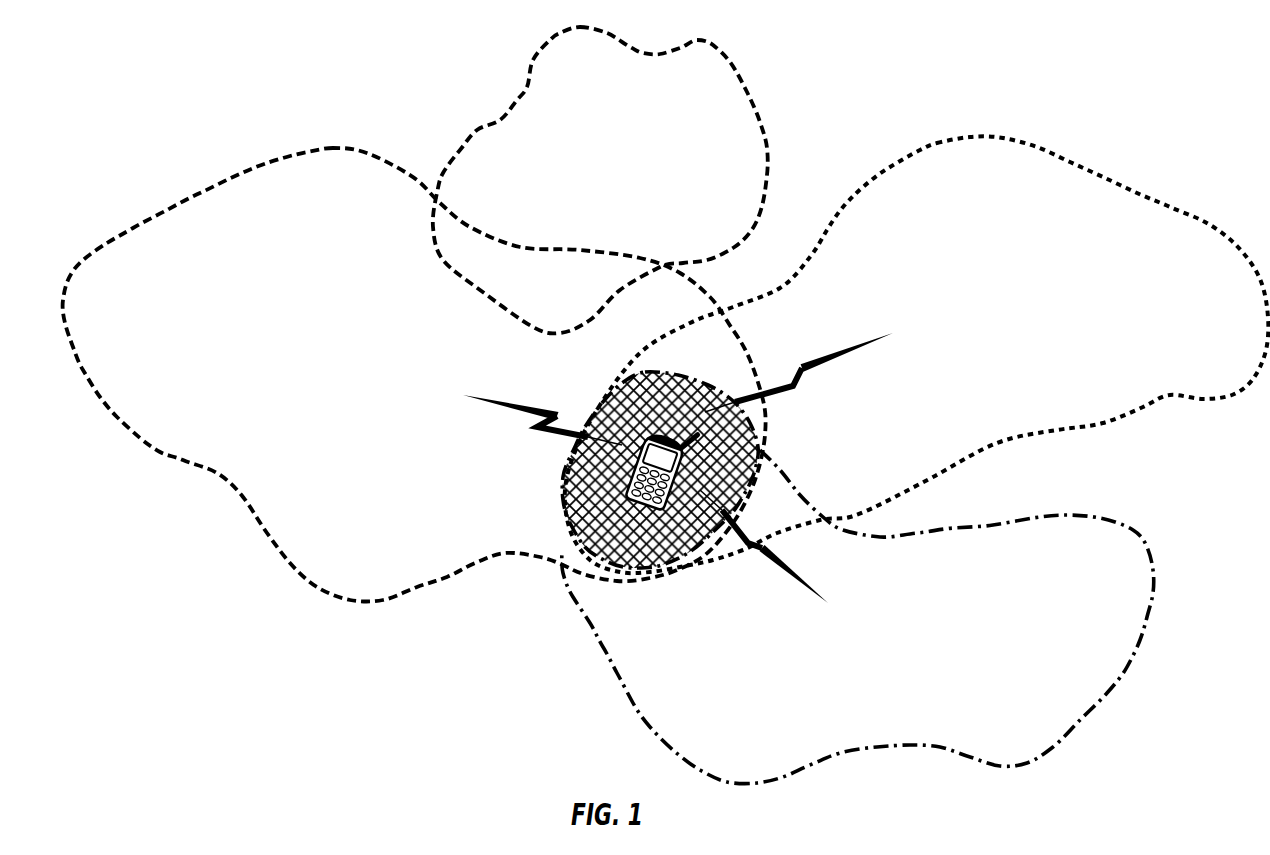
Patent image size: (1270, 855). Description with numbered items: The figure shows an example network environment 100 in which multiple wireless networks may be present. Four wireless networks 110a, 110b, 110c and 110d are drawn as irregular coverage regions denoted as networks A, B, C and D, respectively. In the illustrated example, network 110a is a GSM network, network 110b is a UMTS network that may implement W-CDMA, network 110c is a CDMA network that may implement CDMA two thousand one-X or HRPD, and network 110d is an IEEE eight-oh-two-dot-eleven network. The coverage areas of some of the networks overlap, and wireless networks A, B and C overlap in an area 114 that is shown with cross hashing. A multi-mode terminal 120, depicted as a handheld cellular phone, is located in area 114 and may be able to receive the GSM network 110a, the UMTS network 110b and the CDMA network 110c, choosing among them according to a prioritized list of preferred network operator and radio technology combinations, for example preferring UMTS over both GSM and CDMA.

The network environment 100 is at (176, 60).
The wireless network A 110a is at (336, 148).
The wireless network B 110b is at (998, 123).
The wireless network C 110c is at (1065, 516).
The wireless network D 110d is at (639, 52).
The overlap area 114 is at (741, 494).
The multi-mode terminal 120 is at (672, 436).